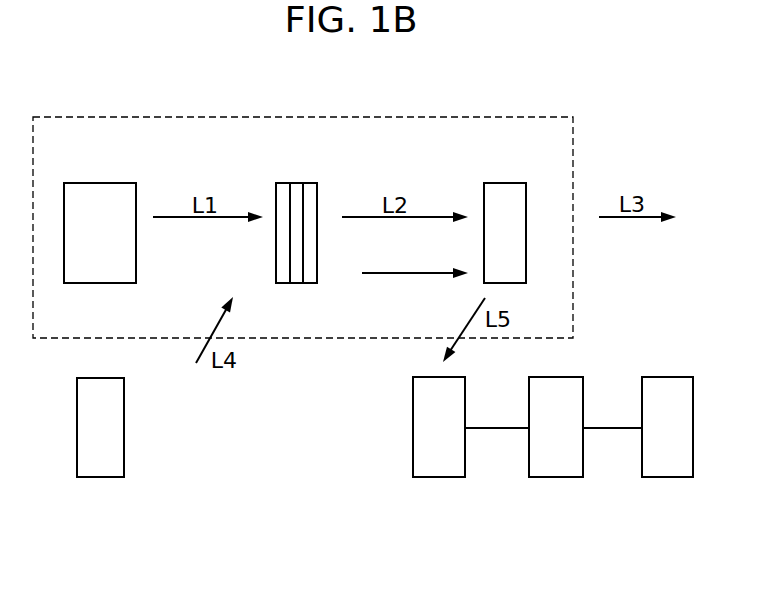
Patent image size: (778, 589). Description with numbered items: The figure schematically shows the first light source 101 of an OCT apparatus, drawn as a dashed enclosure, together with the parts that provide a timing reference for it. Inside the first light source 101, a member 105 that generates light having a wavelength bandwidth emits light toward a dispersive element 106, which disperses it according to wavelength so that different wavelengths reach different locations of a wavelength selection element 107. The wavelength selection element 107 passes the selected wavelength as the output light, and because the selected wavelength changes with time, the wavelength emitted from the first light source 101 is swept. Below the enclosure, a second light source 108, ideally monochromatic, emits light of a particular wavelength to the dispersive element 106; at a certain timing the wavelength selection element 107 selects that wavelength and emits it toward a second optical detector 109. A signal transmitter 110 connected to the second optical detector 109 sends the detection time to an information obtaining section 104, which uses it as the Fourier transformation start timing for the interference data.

The first light source 101 is at (292, 117).
The information obtaining section 104 is at (670, 477).
The member that generates light having a wavelength bandwidth 105 is at (101, 183).
The dispersive element 106 is at (296, 183).
The wavelength selection element 107 is at (505, 183).
The second light source 108 is at (100, 477).
The second optical detector 109 is at (441, 477).
The signal transmitter 110 is at (553, 477).